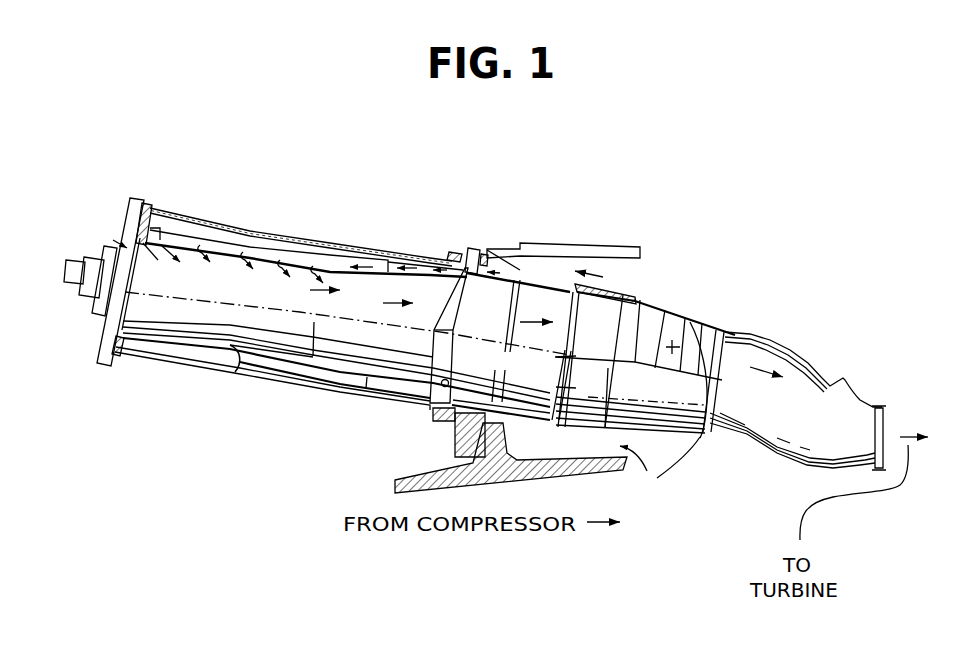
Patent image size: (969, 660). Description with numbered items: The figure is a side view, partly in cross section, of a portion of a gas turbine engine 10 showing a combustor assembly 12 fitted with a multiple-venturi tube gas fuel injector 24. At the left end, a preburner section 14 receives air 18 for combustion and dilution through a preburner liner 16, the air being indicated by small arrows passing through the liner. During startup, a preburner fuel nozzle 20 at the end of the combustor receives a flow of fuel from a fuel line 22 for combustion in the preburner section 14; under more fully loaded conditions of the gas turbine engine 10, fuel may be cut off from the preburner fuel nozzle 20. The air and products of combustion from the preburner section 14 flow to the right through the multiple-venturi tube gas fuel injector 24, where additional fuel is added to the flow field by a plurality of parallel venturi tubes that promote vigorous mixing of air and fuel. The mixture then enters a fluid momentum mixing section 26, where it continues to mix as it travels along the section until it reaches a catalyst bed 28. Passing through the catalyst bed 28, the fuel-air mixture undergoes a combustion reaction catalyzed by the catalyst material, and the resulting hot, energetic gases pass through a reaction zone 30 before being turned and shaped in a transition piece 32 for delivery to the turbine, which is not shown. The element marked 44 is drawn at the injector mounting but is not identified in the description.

The gas turbine engine 10 is at (752, 242).
The combustor assembly 12 is at (323, 236).
The preburner section 14 is at (167, 358).
The preburner liner 16 is at (235, 372).
The air 18 is at (208, 263).
The preburner fuel nozzle 20 is at (94, 292).
The fuel line 22 is at (76, 270).
The multiple-venturi tube gas fuel injector 24 is at (490, 287).
The fluid momentum mixing section 26 is at (548, 303).
The catalyst bed 28 is at (612, 310).
The reaction zone 30 is at (690, 322).
The transition piece 32 is at (813, 397).
The bolt 44 is at (474, 249).